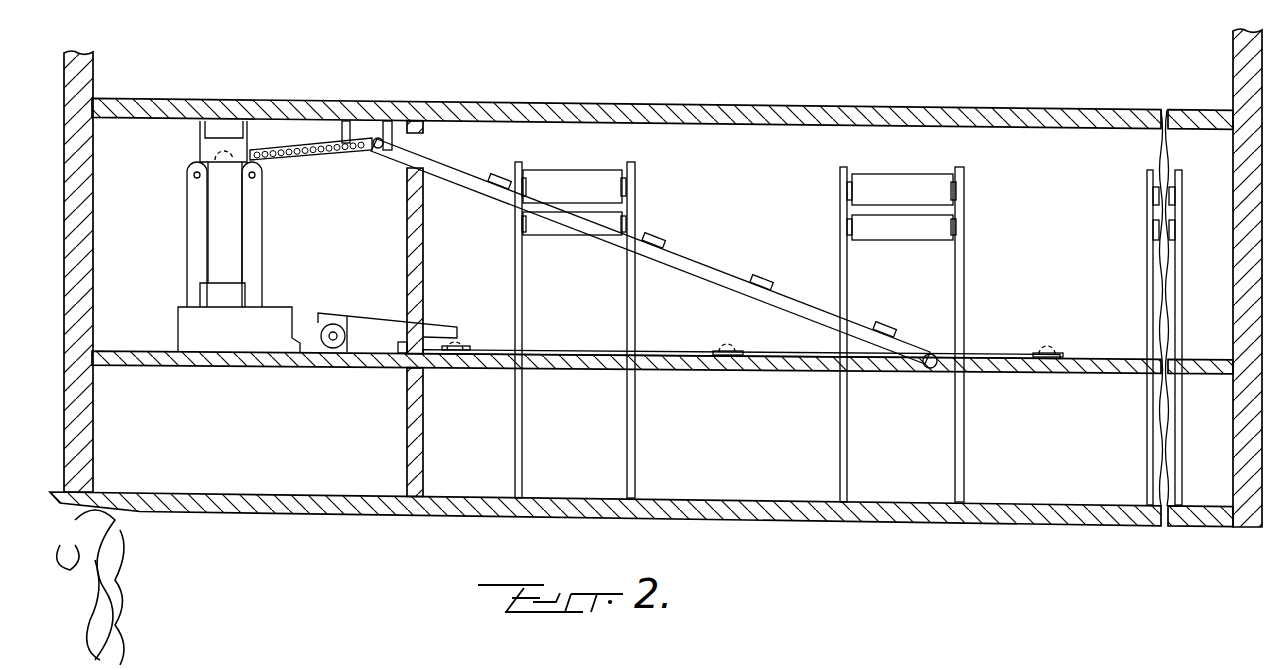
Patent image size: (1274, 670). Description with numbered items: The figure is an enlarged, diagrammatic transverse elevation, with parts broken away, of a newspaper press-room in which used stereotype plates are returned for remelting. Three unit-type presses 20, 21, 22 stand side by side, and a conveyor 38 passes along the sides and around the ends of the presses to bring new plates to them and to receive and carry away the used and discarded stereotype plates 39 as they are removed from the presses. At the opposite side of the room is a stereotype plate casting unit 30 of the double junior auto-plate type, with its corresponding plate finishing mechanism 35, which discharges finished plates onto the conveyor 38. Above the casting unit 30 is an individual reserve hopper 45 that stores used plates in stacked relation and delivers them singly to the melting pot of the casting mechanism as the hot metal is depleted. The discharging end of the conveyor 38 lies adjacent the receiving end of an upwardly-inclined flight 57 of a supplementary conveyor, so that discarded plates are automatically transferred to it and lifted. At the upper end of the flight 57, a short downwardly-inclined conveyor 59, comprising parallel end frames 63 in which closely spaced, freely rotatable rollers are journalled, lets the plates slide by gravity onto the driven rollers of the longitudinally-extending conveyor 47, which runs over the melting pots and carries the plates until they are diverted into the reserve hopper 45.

The press 20 is at (1152, 250).
The press 21 is at (965, 251).
The press 22 is at (633, 204).
The plate casting unit 30 is at (239, 329).
The plate finishing mechanism 35 is at (387, 333).
The conveyor 38 is at (466, 345).
The used stereotype plate 39 is at (493, 176).
The reserve hopper 45 is at (228, 243).
The longitudinally-extending conveyor 47 is at (203, 147).
The upwardly-inclined flight 57 is at (682, 265).
The downwardly-inclined conveyor 59 is at (322, 157).
The end frame 63 is at (287, 162).